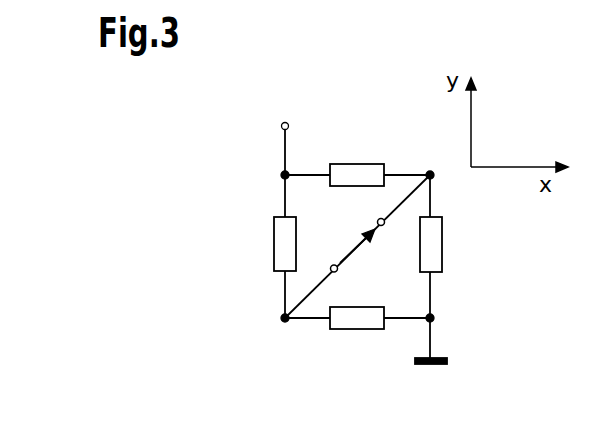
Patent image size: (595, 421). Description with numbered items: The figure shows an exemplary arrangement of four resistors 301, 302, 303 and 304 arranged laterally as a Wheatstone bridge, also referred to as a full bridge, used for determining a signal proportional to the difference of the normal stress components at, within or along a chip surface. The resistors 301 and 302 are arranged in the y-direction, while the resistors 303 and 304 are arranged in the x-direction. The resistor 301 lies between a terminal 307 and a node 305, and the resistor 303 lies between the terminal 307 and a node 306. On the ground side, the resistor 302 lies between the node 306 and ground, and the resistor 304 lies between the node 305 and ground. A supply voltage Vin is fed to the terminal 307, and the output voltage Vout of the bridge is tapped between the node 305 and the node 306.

The resistor 301 is at (262, 244).
The resistor 302 is at (453, 244).
The resistor 303 is at (357, 158).
The resistor 304 is at (357, 334).
The node 305 is at (338, 271).
The node 306 is at (377, 221).
The terminal 307 is at (282, 133).